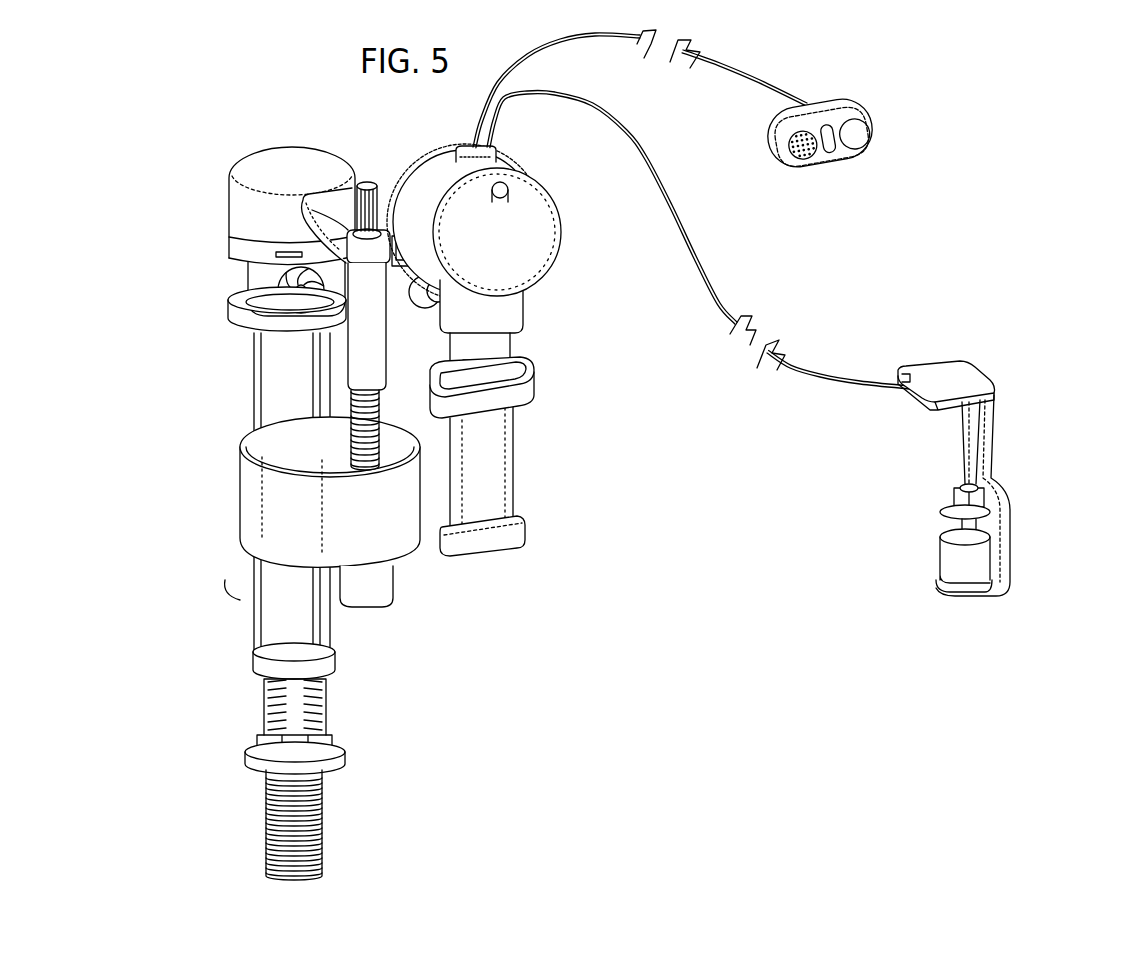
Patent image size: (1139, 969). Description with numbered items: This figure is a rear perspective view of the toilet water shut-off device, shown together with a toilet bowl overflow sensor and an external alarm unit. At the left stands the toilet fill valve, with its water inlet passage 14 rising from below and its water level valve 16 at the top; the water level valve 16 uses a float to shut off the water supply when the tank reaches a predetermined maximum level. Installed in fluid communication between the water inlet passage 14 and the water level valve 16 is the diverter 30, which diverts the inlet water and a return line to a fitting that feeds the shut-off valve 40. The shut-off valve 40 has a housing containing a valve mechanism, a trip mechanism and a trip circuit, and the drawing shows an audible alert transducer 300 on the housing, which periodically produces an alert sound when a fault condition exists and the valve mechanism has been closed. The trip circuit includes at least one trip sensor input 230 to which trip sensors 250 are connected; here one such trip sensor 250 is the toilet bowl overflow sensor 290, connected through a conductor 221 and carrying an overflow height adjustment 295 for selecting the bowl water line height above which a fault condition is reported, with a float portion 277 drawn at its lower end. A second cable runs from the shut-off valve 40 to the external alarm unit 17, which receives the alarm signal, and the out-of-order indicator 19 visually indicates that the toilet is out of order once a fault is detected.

The water inlet passage 14 is at (285, 624).
The water level valve 16 is at (273, 160).
The external alarm unit 17 is at (858, 148).
The out-of-order indicator 19 is at (877, 159).
The diverter 30 is at (245, 270).
The shut-off valve 40 is at (507, 143).
The cable 221 is at (813, 373).
The trip sensor input 230 is at (518, 292).
The trip sensor 250 is at (553, 381).
The float 277 is at (930, 541).
The toilet bowl overflow sensor 290 is at (985, 447).
The overflow height adjustment 295 is at (972, 442).
The audible alert transducer 300 is at (512, 196).